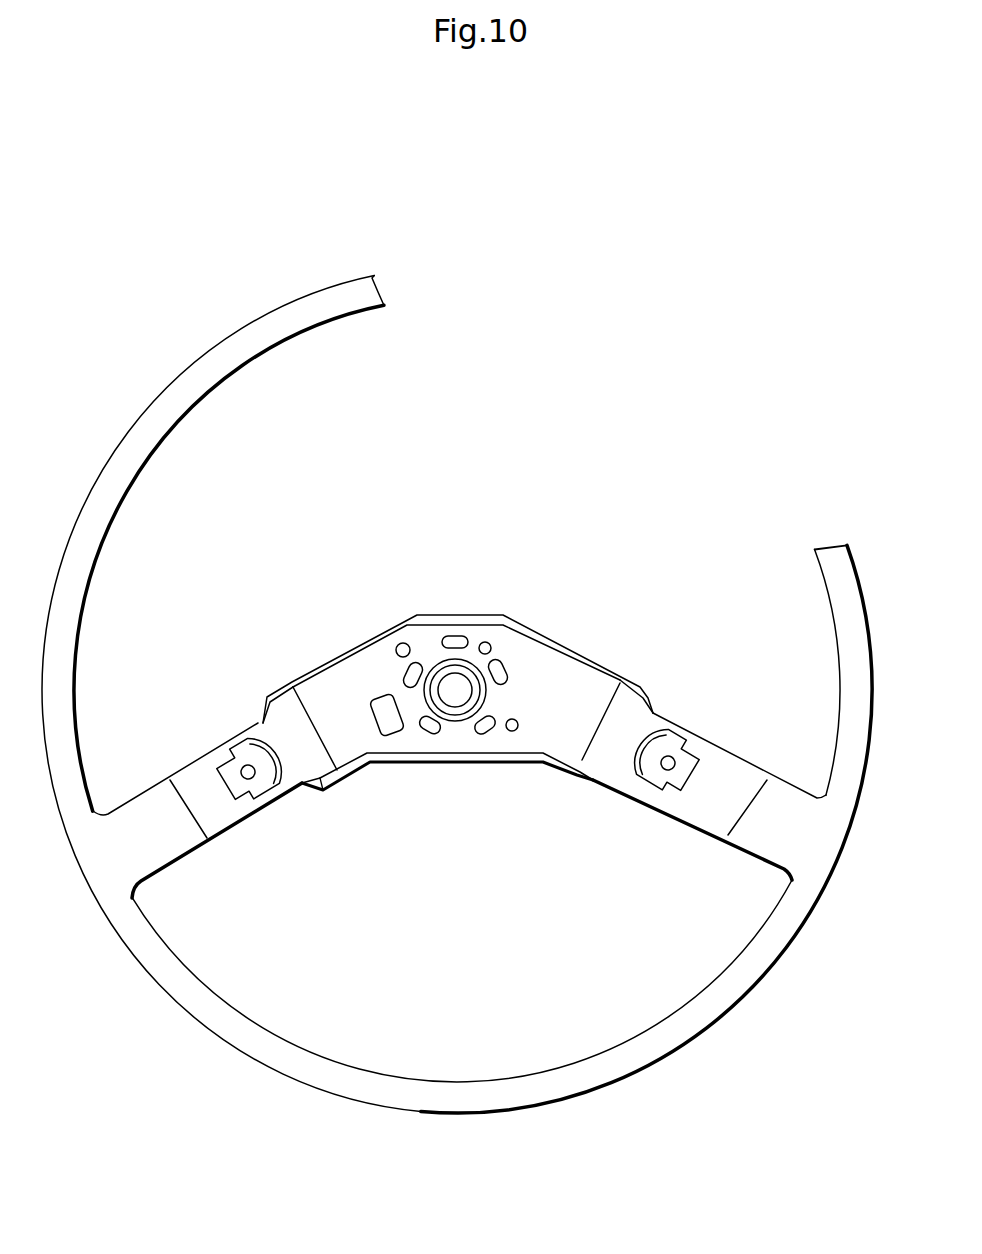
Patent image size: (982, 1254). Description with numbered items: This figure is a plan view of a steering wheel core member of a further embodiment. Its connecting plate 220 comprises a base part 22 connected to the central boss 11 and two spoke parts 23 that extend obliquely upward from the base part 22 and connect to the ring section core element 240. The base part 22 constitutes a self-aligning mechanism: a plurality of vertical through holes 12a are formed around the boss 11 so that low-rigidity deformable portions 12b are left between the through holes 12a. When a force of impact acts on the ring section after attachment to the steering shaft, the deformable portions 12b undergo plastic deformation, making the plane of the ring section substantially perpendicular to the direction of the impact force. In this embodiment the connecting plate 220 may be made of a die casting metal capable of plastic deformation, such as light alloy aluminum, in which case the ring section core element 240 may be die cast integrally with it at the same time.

The ring section core element 240 is at (345, 292).
The connecting plate 220 is at (590, 630).
The base part 22 is at (352, 680).
The boss 11 is at (443, 672).
The through holes 12a is at (455, 640).
The deformable portions 12b is at (453, 733).
The spoke parts 23 is at (157, 813).